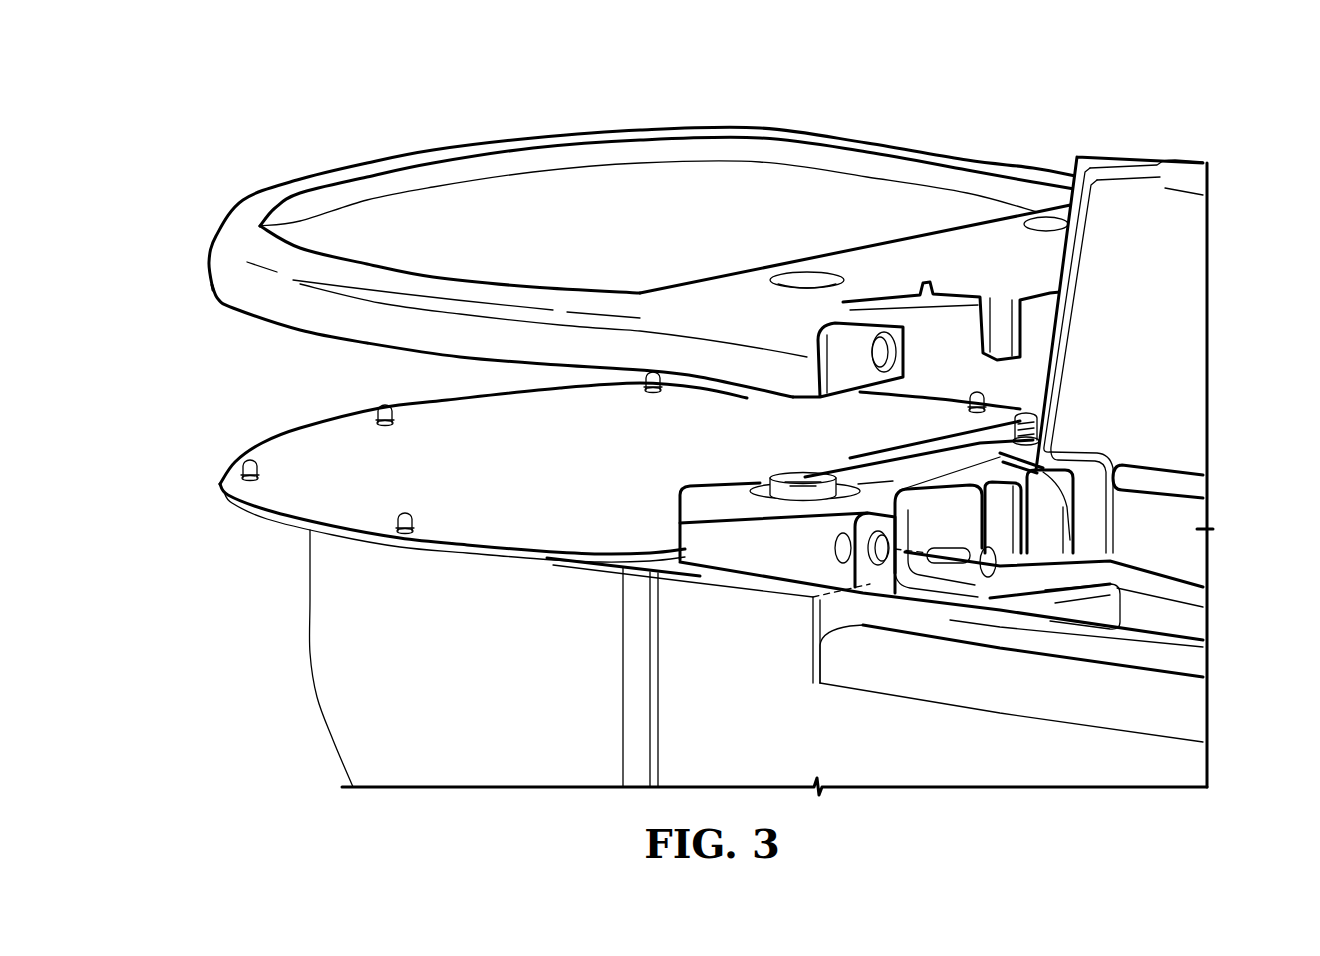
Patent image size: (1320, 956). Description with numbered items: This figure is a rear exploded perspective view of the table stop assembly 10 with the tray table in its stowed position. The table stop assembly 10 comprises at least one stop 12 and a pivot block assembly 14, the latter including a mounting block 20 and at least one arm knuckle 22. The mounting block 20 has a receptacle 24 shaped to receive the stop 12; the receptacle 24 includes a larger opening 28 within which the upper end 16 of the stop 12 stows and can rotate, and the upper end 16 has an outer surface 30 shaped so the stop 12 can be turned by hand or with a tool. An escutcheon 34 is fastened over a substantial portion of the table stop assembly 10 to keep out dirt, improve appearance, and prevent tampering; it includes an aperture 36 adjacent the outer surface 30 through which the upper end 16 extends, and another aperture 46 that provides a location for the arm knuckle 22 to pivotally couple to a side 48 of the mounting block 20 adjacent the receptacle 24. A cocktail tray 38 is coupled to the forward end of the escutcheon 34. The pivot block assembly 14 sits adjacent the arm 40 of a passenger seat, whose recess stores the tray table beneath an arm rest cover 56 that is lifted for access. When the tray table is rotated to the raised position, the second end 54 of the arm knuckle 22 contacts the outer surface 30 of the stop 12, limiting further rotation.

The table stop assembly 10 is at (677, 575).
The stop 12 is at (1037, 420).
The pivot block assembly 14 is at (884, 574).
The upper end 16 is at (1020, 433).
The mounting block 20 is at (858, 482).
The arm knuckle 22 is at (1097, 617).
The receptacle 24 is at (753, 480).
The larger opening 28 is at (803, 490).
The outer surface 30 is at (797, 473).
The escutcheon 34 is at (936, 250).
The aperture 36 is at (783, 275).
The cocktail tray 38 is at (455, 212).
The arm 40 is at (1118, 768).
The aperture 46 is at (917, 320).
The side 48 is at (930, 493).
The second end 54 is at (1050, 590).
The arm rest cover 56 is at (1190, 350).